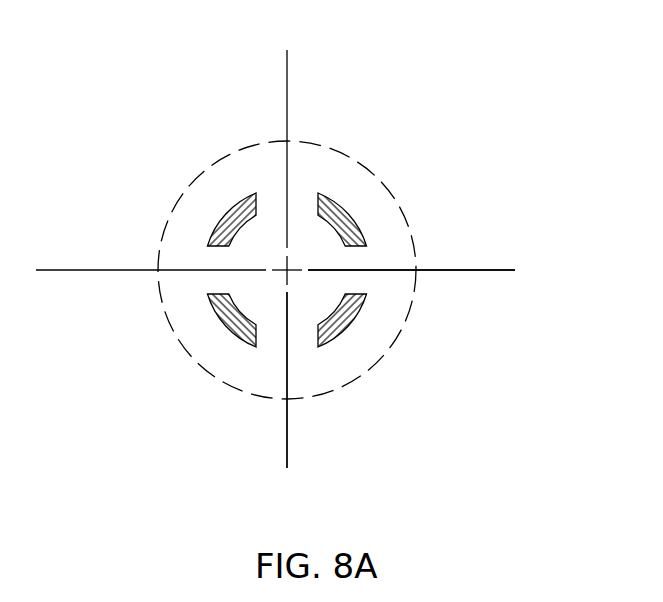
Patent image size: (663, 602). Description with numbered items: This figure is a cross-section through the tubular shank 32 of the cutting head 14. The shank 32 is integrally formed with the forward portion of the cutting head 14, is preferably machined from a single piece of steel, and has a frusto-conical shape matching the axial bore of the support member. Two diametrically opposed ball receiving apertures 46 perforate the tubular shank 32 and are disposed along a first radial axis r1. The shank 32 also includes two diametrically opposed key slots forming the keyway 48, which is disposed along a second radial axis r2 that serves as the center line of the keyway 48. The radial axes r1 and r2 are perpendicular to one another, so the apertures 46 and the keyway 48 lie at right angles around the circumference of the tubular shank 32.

The cutting head 14 is at (426, 120).
The tubular shank 32 is at (353, 338).
The ball receiving apertures 46 is at (363, 277).
The keyway 48 is at (272, 188).
The first radial axis r1 is at (476, 271).
The second radial axis r2 is at (286, 443).